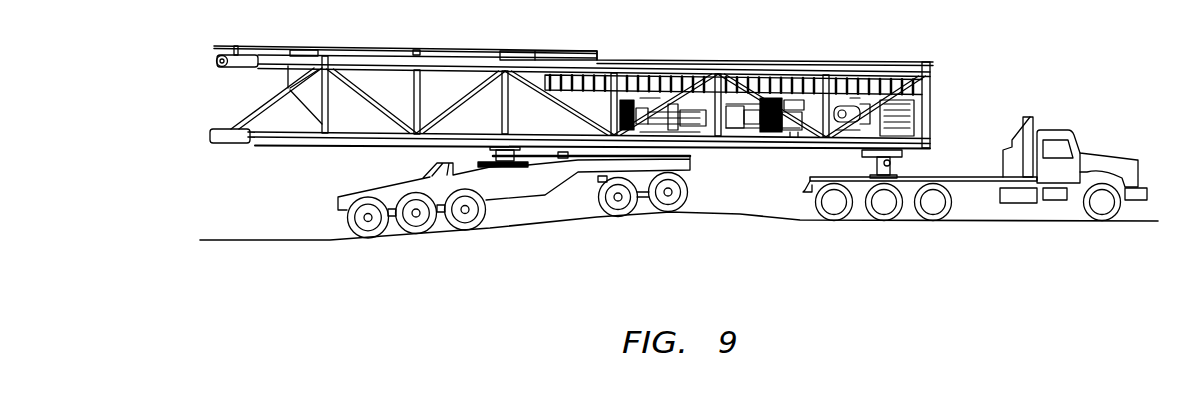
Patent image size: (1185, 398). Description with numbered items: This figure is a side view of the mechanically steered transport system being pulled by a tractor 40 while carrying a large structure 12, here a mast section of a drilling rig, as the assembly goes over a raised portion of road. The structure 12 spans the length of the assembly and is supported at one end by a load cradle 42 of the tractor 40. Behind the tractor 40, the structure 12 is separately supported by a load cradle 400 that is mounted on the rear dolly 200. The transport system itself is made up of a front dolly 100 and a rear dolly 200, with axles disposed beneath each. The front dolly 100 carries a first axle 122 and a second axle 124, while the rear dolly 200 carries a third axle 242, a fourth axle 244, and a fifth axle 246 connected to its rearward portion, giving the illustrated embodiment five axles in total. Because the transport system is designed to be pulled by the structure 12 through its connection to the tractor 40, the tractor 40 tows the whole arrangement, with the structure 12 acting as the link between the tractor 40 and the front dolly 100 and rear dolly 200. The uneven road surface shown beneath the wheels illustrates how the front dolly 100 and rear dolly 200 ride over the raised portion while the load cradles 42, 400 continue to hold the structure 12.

The structure 12 is at (400, 47).
The tractor 40 is at (1112, 153).
The load cradle 42 is at (910, 173).
The front dolly 100 is at (697, 183).
The first axle 122 is at (672, 211).
The second axle 124 is at (620, 211).
The rear dolly 200 is at (338, 198).
The third axle 242 is at (470, 231).
The fourth axle 244 is at (418, 235).
The fifth axle 246 is at (363, 238).
The load cradle 400 is at (518, 158).